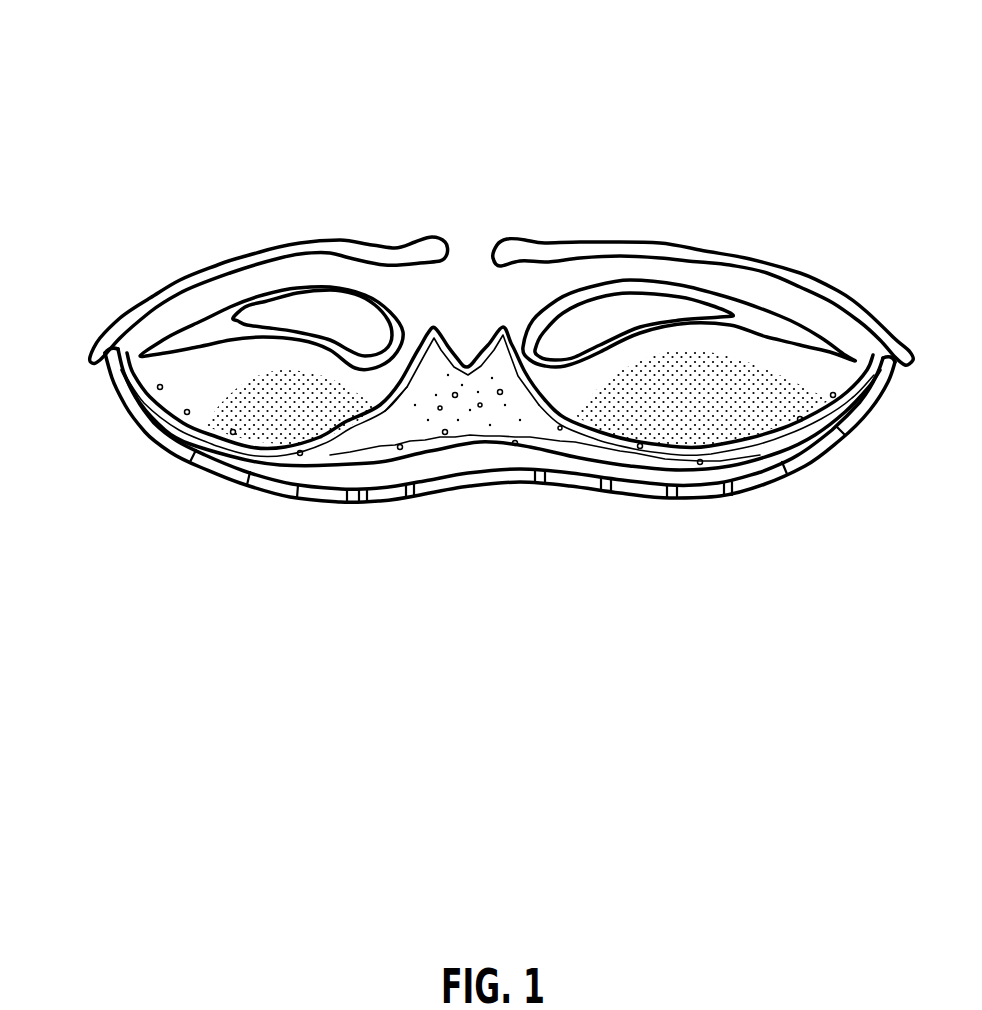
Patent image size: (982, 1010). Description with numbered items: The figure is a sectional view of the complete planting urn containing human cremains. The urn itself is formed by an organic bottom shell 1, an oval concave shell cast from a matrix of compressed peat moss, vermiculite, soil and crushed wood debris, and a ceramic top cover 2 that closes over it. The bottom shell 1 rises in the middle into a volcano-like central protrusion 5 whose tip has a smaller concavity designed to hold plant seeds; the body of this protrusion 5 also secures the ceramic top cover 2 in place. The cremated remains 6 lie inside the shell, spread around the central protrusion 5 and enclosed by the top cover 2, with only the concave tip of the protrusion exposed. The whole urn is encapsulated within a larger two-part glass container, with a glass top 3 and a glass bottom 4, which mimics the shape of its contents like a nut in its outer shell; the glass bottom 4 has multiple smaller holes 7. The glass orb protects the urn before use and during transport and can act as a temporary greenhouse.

The organic bottom shell 1 is at (373, 443).
The ceramic top cover 2 is at (755, 318).
The glass container top 3 is at (230, 263).
The glass container bottom 4 is at (762, 479).
The central protrusion 5 is at (470, 337).
The cremated remains 6 is at (252, 393).
The smaller holes 7 is at (607, 500).